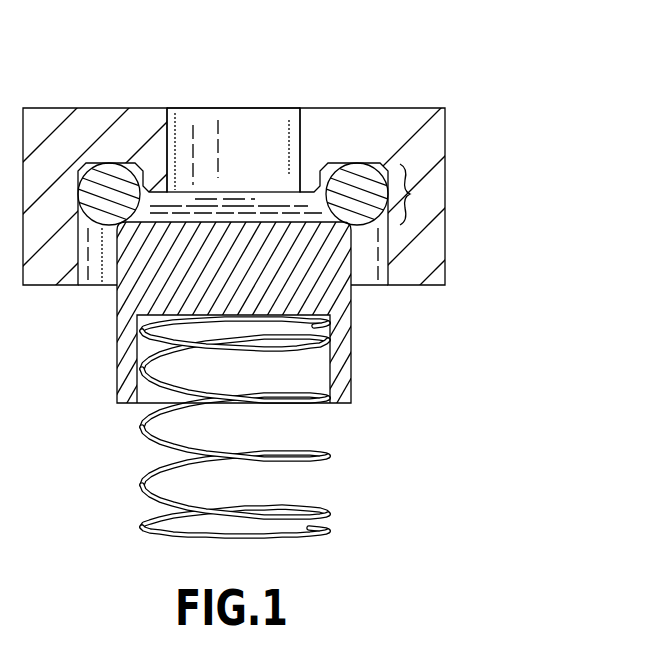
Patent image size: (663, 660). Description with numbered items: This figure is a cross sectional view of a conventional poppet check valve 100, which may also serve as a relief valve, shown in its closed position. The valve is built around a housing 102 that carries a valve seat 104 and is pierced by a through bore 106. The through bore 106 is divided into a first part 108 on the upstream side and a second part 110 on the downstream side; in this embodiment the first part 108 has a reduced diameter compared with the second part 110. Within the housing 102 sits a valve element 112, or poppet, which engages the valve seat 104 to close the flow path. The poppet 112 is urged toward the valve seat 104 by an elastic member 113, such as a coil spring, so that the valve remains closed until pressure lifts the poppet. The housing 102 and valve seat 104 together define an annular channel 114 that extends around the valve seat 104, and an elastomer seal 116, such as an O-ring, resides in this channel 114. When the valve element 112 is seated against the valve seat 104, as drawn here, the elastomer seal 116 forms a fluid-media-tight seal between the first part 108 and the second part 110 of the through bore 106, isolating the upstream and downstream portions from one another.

The poppet check valve 100 is at (490, 69).
The housing 102 is at (430, 262).
The valve seat 104 is at (410, 193).
The through bore 106 is at (205, 80).
The first part of the through bore 108 is at (273, 133).
The second part of the through bore 110 is at (373, 277).
The valve element 112 is at (251, 281).
The elastic member 113 is at (318, 455).
The annular channel 114 is at (108, 162).
The elastomer seal 116 is at (358, 172).